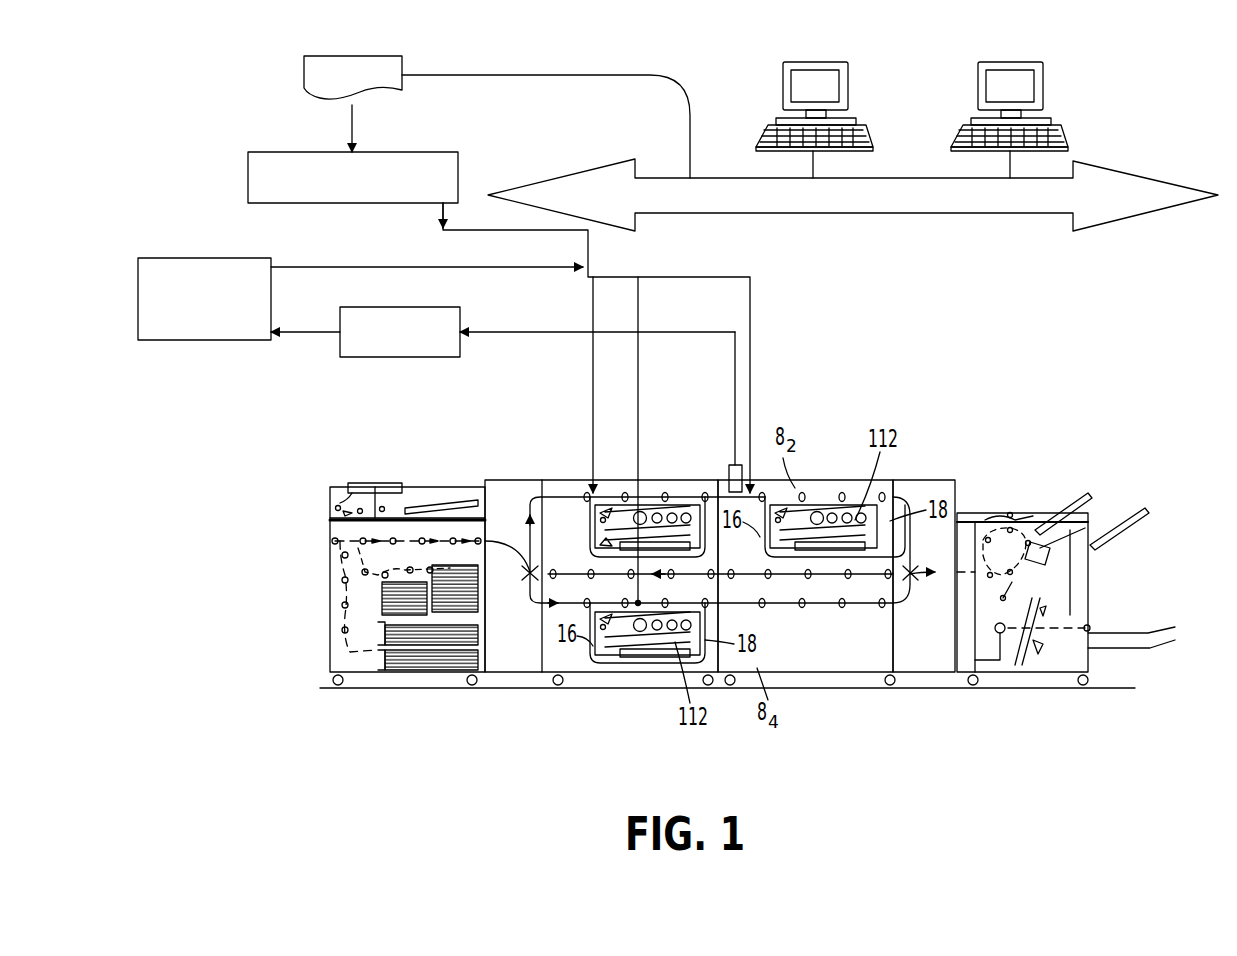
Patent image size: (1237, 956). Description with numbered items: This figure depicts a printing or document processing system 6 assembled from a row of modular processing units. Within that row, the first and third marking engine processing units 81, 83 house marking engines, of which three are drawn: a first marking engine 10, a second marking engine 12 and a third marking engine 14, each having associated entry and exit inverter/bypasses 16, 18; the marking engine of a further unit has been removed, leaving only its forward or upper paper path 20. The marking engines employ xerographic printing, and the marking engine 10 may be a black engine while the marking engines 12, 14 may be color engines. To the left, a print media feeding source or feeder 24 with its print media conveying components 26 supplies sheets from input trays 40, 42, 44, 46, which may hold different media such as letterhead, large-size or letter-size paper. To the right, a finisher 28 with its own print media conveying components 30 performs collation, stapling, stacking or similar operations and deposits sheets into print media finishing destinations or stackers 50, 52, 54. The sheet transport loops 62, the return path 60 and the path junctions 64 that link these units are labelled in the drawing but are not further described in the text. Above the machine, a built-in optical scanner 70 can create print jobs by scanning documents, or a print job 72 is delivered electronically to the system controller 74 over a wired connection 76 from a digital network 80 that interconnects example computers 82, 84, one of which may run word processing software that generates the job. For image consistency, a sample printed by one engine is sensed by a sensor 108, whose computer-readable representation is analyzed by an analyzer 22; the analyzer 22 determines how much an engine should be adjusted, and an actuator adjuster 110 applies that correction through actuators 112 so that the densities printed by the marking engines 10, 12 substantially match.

The printing system 6 is at (955, 358).
The first marking engine 10 is at (654, 493).
The second marking engine 12 is at (845, 505).
The third marking engine 14 is at (660, 642).
The entry inverter/bypass 16 is at (593, 536).
The exit inverter/bypass 18 is at (705, 538).
The upper paper path 20 is at (826, 494).
The analyzer 22 is at (400, 357).
The print media feeding source 24 is at (410, 572).
The print media conveying components 26 is at (362, 530).
The finisher 28 is at (1070, 577).
The print media conveying components 30 is at (992, 511).
The print media source 40 is at (390, 602).
The print media source 42 is at (410, 665).
The print media source 44 is at (445, 640).
The print media source 46 is at (465, 610).
The print media finishing destination 50 is at (1060, 496).
The print media finishing destination 52 is at (1124, 516).
The print media finishing destination 54 is at (1138, 630).
The return paper path 60 is at (838, 580).
The paper path 62 is at (532, 500).
The path junction 64 is at (528, 572).
The optical scanner 70 is at (400, 490).
The print job 72 is at (402, 92).
The system controller 74 is at (272, 152).
The wired connection 76 is at (528, 80).
The digital network 80 is at (853, 195).
The first marking engine processing unit 81 is at (622, 488).
The computer 82 is at (783, 95).
The third marking engine processing unit 83 is at (576, 668).
The computer 84 is at (978, 90).
The sensor 108 is at (760, 425).
The actuator adjuster 110 is at (202, 258).
The actuators 112 is at (690, 510).